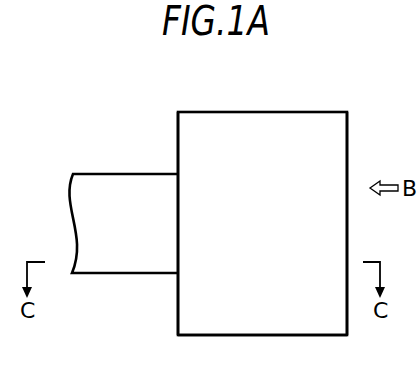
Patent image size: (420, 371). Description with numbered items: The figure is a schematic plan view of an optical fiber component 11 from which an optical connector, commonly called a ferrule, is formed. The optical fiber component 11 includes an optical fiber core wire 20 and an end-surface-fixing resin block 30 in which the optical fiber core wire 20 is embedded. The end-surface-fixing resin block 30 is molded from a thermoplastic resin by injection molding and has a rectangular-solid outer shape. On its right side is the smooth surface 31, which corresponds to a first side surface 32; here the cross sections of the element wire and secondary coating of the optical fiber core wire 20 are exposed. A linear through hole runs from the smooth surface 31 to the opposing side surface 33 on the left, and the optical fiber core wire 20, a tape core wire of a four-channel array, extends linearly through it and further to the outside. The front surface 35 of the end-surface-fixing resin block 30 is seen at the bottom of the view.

The optical fiber component 11 is at (140, 124).
The optical fiber core wire 20 is at (132, 258).
The end-surface-fixing resin block 30 is at (283, 153).
The smooth surface 31 is at (347, 222).
The first side surface 32 is at (347, 148).
The opposing side surface 33 is at (178, 150).
The front surface 35 is at (278, 308).